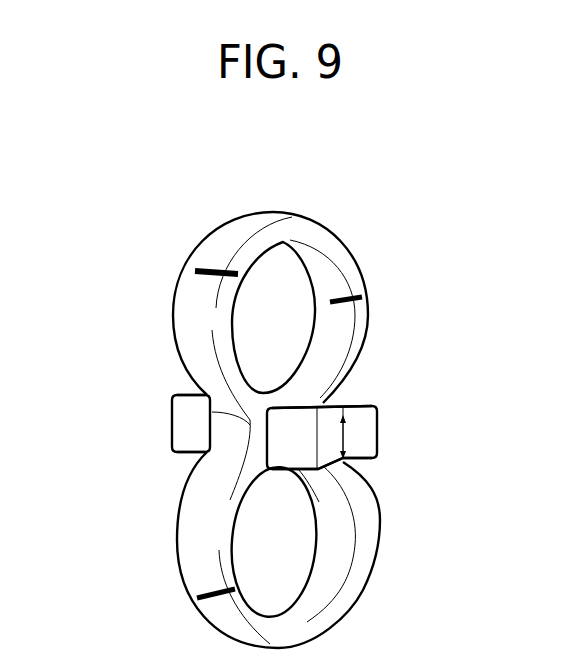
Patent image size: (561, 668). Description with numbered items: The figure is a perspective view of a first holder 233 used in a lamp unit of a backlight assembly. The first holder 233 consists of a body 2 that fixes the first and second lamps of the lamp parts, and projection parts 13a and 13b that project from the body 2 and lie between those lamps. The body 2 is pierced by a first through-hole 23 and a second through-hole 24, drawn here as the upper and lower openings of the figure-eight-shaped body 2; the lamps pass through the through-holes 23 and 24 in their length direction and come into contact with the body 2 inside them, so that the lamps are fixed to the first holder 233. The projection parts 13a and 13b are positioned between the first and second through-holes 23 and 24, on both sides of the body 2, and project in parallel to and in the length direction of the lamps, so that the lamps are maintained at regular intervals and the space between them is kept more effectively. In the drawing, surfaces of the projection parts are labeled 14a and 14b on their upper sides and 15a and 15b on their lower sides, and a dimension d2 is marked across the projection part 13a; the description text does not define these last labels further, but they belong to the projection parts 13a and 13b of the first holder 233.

The body 2 is at (232, 233).
The first holder 233 is at (473, 161).
The first through-hole 23 is at (283, 316).
The second through-hole 24 is at (282, 525).
The projection part 13a is at (345, 421).
The projection part 13b is at (186, 427).
The upper surface of right protrusion 14a is at (338, 388).
The upper surface of left protrusion 14b is at (187, 394).
The lower surface of right protrusion 15a is at (352, 466).
The lower surface of left protrusion 15b is at (184, 453).
The width of protrusion d2 is at (350, 441).